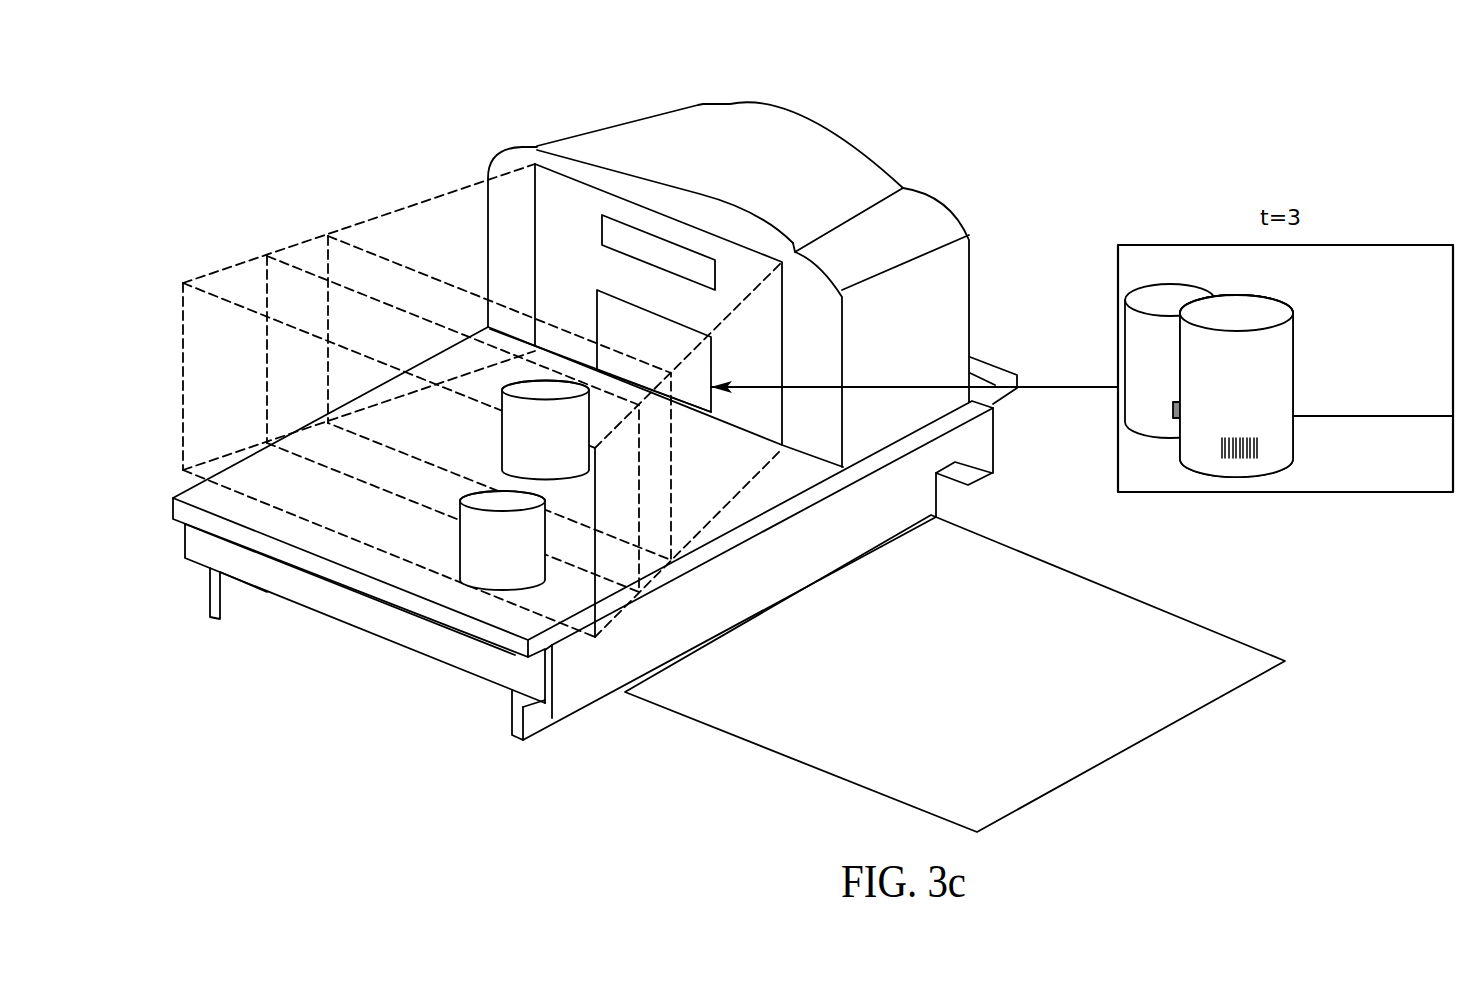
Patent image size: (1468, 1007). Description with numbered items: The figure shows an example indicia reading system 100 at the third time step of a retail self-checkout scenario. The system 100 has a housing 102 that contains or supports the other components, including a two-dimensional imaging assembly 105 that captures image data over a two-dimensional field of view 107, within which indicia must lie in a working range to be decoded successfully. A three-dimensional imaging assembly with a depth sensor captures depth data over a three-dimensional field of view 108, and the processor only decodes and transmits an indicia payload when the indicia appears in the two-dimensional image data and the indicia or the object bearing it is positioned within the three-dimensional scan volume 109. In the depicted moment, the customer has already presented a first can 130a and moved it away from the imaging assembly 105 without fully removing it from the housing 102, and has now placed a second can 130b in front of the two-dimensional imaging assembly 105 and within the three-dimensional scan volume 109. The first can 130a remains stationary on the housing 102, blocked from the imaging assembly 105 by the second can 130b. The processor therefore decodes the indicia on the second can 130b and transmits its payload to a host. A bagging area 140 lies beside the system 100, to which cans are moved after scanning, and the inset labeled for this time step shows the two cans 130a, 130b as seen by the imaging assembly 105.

The indicia reading system 100 is at (947, 125).
The housing 102 is at (973, 234).
The two-dimensional (2D) imaging assembly 105 is at (658, 343).
The 2D field of view (FOV) 107 is at (265, 385).
The 3D field of view (FOV) 108 is at (598, 637).
The 3D scan volume 109 is at (676, 558).
The first can 130a is at (485, 548).
The second can 130b is at (547, 418).
The bagging area 140 is at (1217, 675).